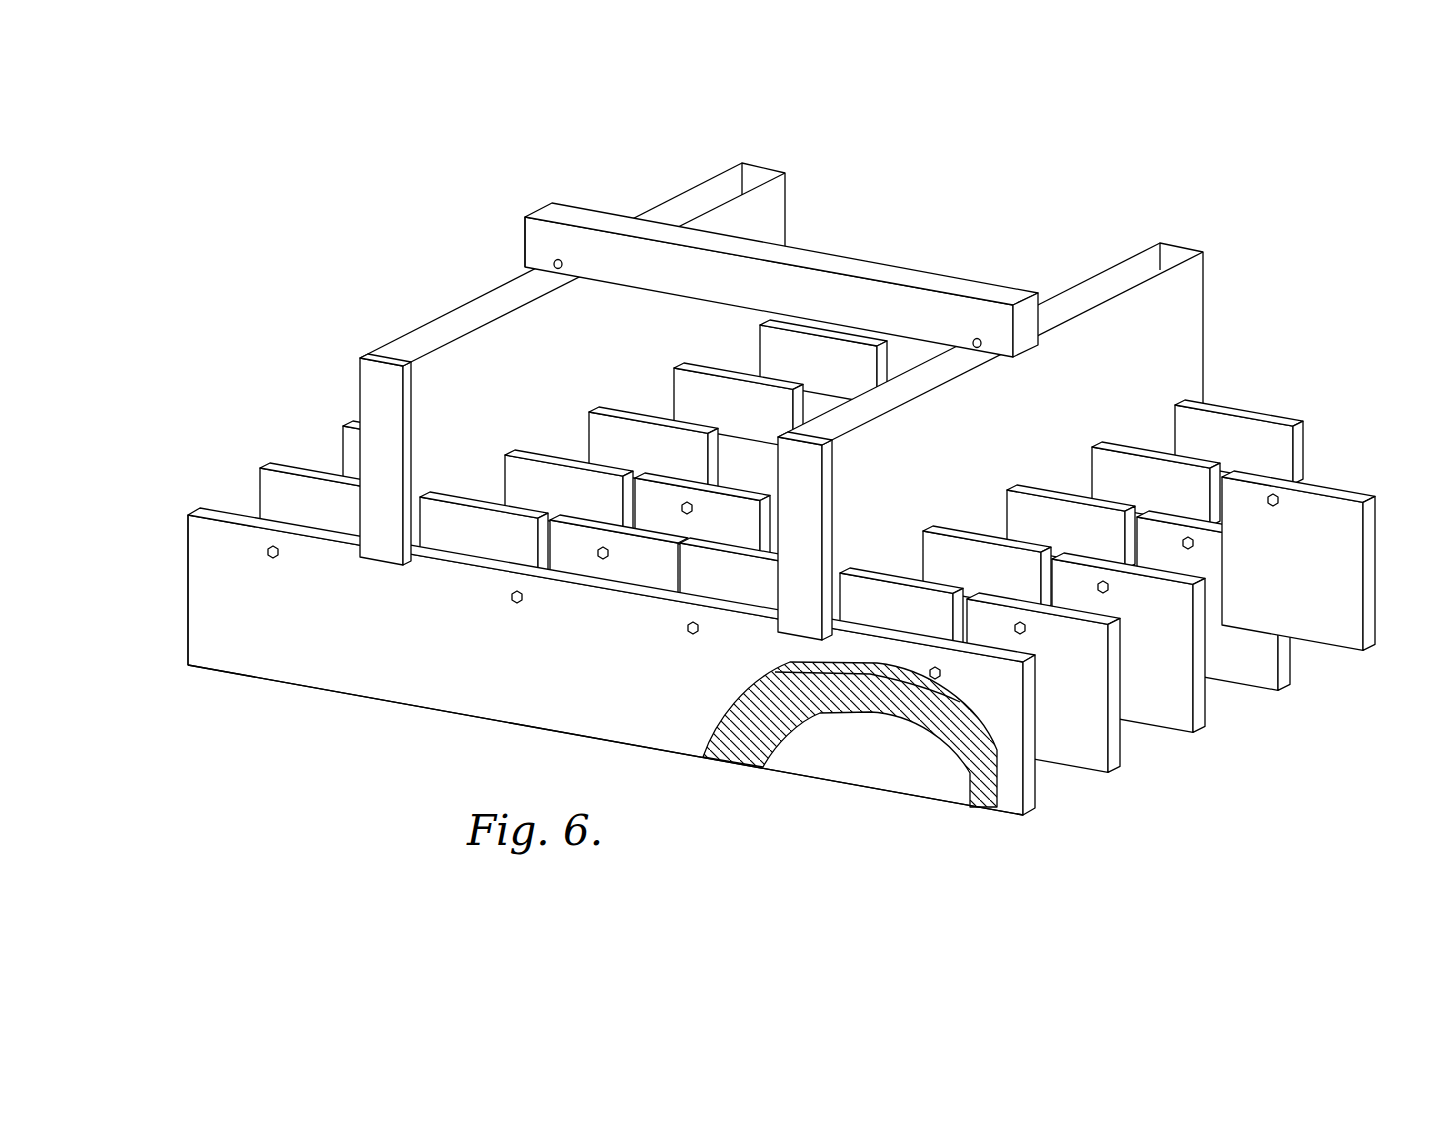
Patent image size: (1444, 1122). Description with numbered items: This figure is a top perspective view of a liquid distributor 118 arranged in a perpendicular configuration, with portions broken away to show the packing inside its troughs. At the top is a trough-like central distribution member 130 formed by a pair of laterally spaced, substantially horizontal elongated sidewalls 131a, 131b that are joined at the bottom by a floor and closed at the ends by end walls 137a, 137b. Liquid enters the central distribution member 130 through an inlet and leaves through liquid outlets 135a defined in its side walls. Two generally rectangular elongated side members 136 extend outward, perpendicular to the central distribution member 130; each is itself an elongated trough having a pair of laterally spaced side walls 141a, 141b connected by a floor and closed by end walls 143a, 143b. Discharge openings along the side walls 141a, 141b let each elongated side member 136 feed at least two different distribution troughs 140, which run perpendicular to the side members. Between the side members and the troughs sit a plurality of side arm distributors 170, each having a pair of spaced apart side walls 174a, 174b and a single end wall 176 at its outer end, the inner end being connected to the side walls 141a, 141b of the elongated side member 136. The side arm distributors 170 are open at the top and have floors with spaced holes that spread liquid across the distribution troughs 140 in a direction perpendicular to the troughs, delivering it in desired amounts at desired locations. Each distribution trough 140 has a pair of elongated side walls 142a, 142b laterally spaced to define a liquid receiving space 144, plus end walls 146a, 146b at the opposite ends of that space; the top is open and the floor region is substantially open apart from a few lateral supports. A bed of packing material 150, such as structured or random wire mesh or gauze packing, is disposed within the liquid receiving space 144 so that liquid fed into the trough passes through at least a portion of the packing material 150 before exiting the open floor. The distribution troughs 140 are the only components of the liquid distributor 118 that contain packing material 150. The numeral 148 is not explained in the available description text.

The liquid distributor 118 is at (215, 225).
The central distribution member 130 is at (794, 260).
The sidewall 131a is at (690, 285).
The sidewall 131b is at (920, 273).
The liquid outlet 135a is at (555, 262).
The elongated side member 136 is at (834, 279).
The end wall 137a is at (1040, 318).
The end wall 137b is at (545, 212).
The distribution trough 140 is at (765, 640).
The side wall 141a is at (1016, 258).
The side wall 141b is at (713, 190).
The elongated side wall 142a is at (765, 631).
The elongated side wall 142b is at (226, 512).
The end wall 143a is at (757, 185).
The end wall 143b is at (378, 382).
The liquid receiving space 144 is at (870, 682).
The end wall 146a is at (1040, 790).
The end wall 146b is at (177, 517).
The bottom edge of panel 148 is at (392, 710).
The packing material 150 is at (743, 752).
The side arm distributor 170 is at (822, 447).
The side wall 174a is at (1210, 420).
The side wall 174b is at (1283, 415).
The end wall 176 is at (1300, 445).